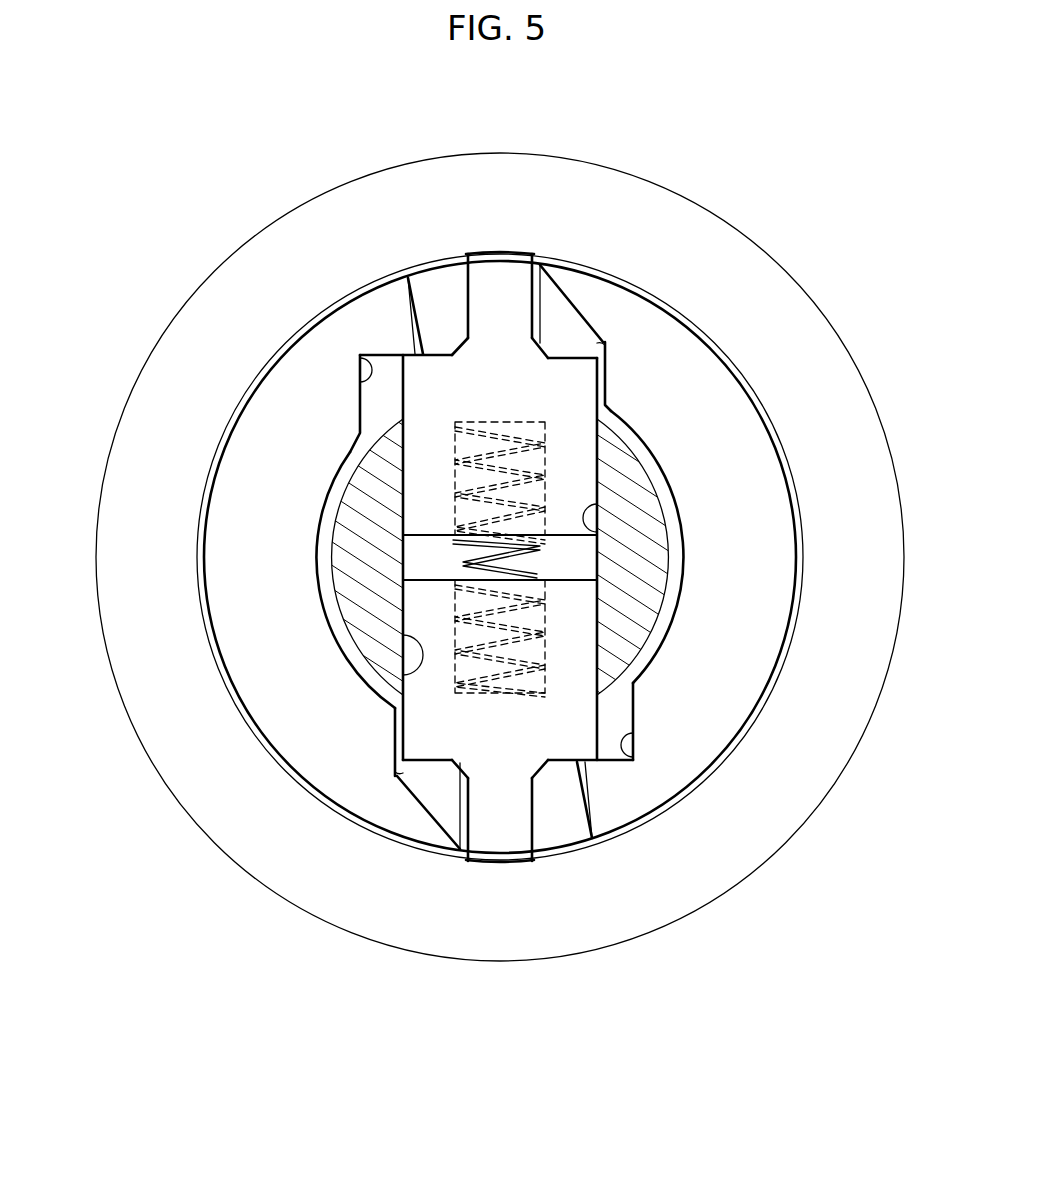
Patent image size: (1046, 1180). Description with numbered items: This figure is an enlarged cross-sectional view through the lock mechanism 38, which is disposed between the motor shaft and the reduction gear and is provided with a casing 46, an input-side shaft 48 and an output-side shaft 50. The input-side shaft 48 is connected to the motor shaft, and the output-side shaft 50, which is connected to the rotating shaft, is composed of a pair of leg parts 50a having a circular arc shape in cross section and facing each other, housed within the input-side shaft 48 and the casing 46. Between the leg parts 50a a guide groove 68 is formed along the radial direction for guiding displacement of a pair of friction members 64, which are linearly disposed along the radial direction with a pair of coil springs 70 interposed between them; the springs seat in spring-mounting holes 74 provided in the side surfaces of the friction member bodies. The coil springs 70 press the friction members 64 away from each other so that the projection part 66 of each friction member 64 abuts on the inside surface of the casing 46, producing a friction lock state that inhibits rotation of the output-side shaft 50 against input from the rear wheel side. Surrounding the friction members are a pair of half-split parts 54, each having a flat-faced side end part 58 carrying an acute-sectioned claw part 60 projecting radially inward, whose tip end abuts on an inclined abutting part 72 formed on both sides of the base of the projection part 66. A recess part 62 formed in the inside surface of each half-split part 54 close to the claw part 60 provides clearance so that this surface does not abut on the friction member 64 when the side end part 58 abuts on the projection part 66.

The lock mechanism 38 is at (772, 198).
The casing 46 is at (893, 480).
The input-side shaft 48 is at (803, 545).
The output-side shaft 50 is at (655, 607).
The leg part 50a is at (700, 588).
The half-split part 54 is at (763, 585).
The side end part 58 is at (387, 333).
The claw part 60 is at (373, 320).
The recess part 62 is at (365, 413).
The friction member 64 is at (345, 508).
The projection part 66 is at (500, 253).
The guide groove 68 is at (640, 440).
The coil spring 70 is at (398, 403).
The abutting part 72 is at (418, 280).
The spring-mounting hole 74 is at (548, 495).